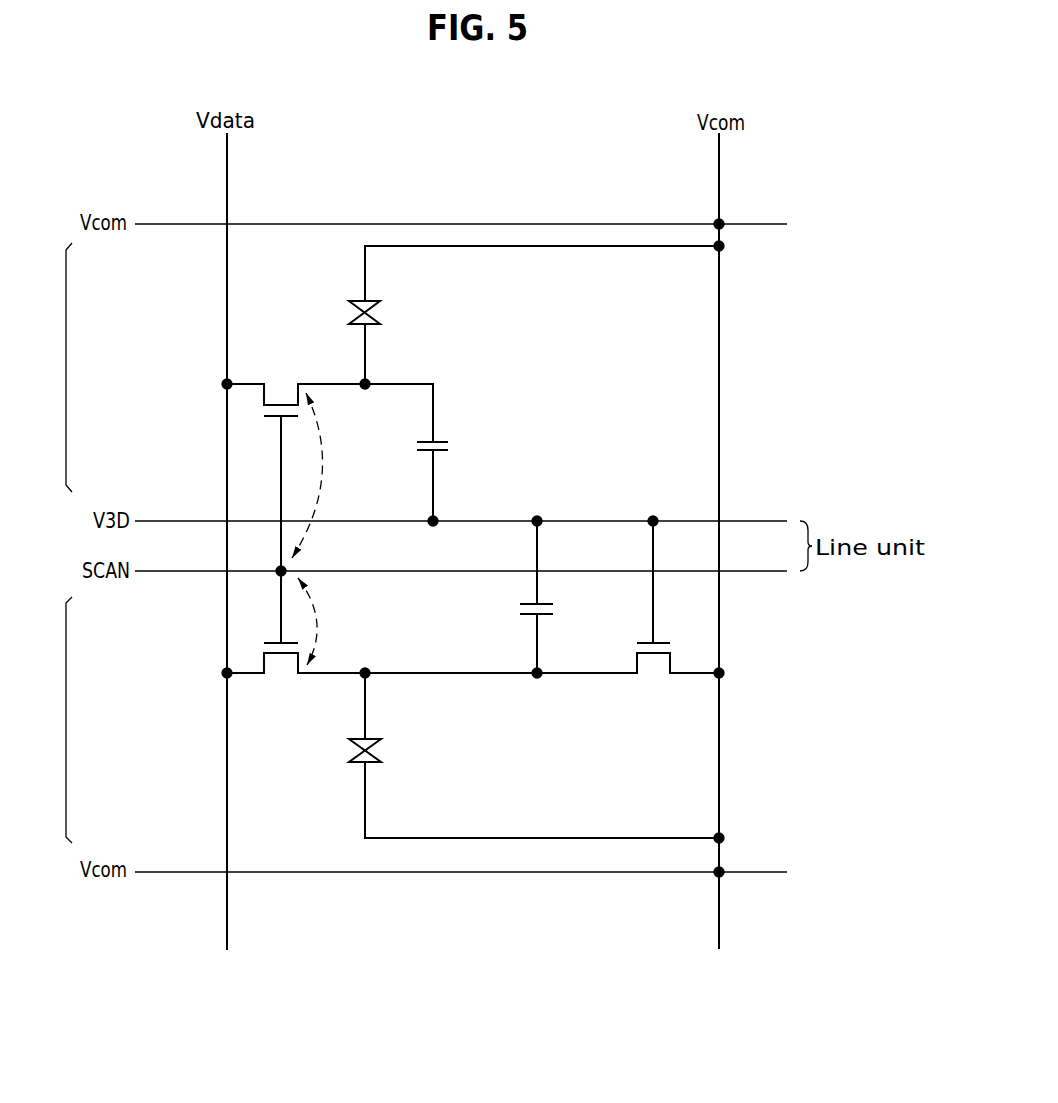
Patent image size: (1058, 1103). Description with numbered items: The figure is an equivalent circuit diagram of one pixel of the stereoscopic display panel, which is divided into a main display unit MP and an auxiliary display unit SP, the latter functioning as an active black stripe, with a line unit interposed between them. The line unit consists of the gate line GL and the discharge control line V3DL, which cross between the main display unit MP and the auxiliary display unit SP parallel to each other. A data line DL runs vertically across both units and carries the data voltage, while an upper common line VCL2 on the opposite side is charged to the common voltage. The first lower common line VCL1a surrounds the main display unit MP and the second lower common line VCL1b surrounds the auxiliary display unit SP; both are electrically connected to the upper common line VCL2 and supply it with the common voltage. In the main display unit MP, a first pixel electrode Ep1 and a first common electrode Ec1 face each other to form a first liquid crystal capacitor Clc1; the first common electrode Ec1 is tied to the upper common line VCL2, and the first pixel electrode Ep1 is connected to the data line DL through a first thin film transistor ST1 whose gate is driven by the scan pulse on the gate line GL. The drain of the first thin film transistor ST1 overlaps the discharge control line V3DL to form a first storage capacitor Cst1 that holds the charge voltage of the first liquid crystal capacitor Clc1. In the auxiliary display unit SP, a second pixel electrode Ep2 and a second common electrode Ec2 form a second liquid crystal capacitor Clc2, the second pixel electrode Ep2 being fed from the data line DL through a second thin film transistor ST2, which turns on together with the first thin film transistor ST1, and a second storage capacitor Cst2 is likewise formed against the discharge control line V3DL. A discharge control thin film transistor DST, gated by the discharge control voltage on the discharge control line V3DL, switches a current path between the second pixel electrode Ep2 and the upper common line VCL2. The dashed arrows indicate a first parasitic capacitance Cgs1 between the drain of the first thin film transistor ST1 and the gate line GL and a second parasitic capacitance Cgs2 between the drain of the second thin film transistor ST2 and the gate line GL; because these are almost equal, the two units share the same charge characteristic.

The data line DL is at (228, 160).
The upper common line VCL2 is at (720, 160).
The first lower common line VCL1a is at (183, 227).
The second lower common line VCL1b is at (188, 875).
The discharge control line V3DL is at (190, 521).
The gate line GL is at (188, 574).
The main display unit MP is at (51, 367).
The auxiliary display unit SP is at (51, 720).
The first thin film transistor ST1 is at (293, 465).
The second thin film transistor ST2 is at (293, 639).
The discharge control thin film transistor DST is at (630, 611).
The first storage capacitor Cst1 is at (432, 450).
The second storage capacitor Cst2 is at (484, 599).
The first liquid crystal capacitor Clc1 is at (392, 311).
The second liquid crystal capacitor Clc2 is at (392, 752).
The first common electrode Ec1 is at (376, 300).
The first pixel electrode Ep1 is at (375, 326).
The second common electrode Ec2 is at (373, 765).
The second pixel electrode Ep2 is at (372, 737).
The first parasitic capacitance Cgs1 is at (333, 475).
The second parasitic capacitance Cgs2 is at (335, 621).